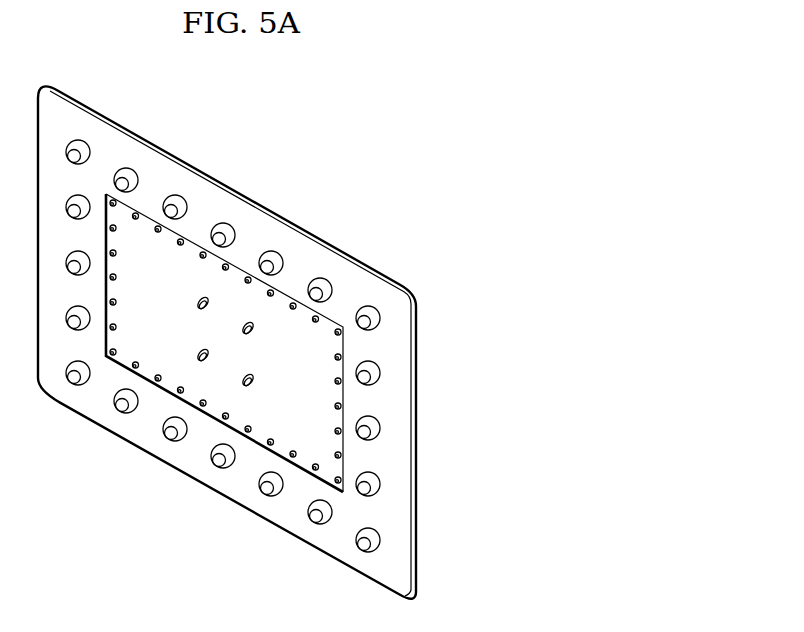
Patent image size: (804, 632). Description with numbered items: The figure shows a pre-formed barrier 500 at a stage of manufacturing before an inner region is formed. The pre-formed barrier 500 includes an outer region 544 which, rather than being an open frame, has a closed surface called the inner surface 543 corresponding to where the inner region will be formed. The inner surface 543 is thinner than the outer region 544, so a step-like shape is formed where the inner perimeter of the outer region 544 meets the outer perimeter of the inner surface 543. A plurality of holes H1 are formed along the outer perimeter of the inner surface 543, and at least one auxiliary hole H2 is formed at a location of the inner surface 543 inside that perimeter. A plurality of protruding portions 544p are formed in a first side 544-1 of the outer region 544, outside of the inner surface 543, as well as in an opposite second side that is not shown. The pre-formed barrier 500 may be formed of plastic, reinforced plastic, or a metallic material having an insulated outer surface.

The pre-formed barrier 500 is at (270, 342).
The outer region 544 is at (392, 367).
The protruding portions 544p is at (371, 327).
The first side 544-1 is at (400, 507).
The inner surface 543 is at (312, 418).
The holes H1 is at (342, 383).
The auxiliary hole H2 is at (201, 358).